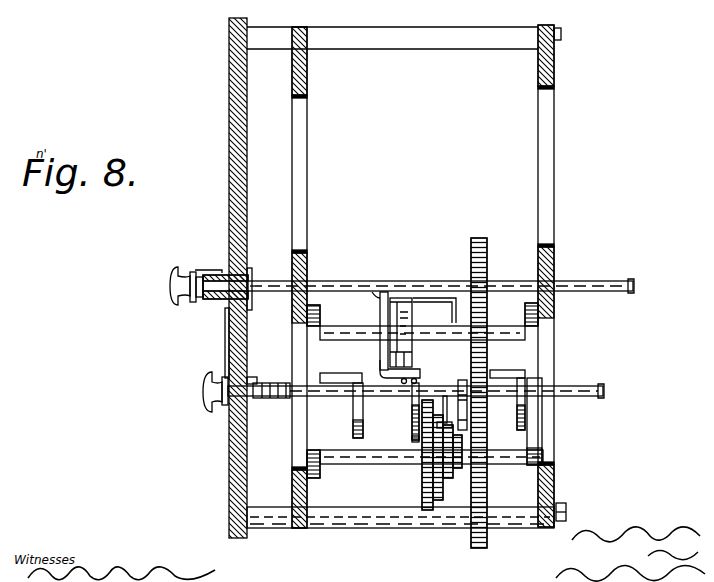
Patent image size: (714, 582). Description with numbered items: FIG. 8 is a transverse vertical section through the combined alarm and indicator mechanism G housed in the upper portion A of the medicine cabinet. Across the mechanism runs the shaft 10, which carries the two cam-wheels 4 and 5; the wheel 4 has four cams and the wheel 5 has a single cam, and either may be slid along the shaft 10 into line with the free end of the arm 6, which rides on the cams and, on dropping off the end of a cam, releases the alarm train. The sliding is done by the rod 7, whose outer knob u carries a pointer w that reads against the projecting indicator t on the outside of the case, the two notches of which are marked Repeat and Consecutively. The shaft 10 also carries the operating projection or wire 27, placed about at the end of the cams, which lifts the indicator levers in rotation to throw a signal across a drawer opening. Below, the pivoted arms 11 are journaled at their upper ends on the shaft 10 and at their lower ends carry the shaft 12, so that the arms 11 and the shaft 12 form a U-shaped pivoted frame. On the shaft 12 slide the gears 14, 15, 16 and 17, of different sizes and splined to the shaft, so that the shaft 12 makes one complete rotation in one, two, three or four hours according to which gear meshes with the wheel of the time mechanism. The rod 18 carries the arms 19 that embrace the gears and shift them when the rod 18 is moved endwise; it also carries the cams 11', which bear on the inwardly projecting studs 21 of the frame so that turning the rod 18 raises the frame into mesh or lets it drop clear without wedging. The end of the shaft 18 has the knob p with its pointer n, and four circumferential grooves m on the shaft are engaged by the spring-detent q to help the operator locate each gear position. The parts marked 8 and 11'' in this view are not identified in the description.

The upper portion A is at (240, 118).
The combined alarm and indicator mechanism G is at (406, 276).
The pointer w is at (210, 270).
The knob or handle u is at (172, 292).
The projecting indicator t is at (208, 300).
The pointer n is at (225, 322).
The spring-detent q is at (252, 378).
The handle or knob p is at (206, 392).
The circumferential grooves m is at (270, 398).
The sliding rod 7 is at (331, 288).
The shaft 10 is at (326, 332).
The cam-wheel 4 is at (380, 310).
The cam-wheel 5 is at (405, 300).
The operating projection 27 is at (440, 300).
The studs or pins 21 is at (348, 374).
The arm 8 is at (384, 338).
The projecting arm 6 is at (405, 358).
The gear 16 is at (445, 395).
The rod or shaft 18 is at (352, 398).
The arms 19 is at (412, 400).
The cams 11' is at (416, 442).
The pinion 11'' is at (507, 406).
The pivoted arms 11 is at (427, 428).
The shaft 12 is at (356, 460).
The gear 14 is at (422, 470).
The gear 17 is at (455, 470).
The gear 15 is at (437, 500).